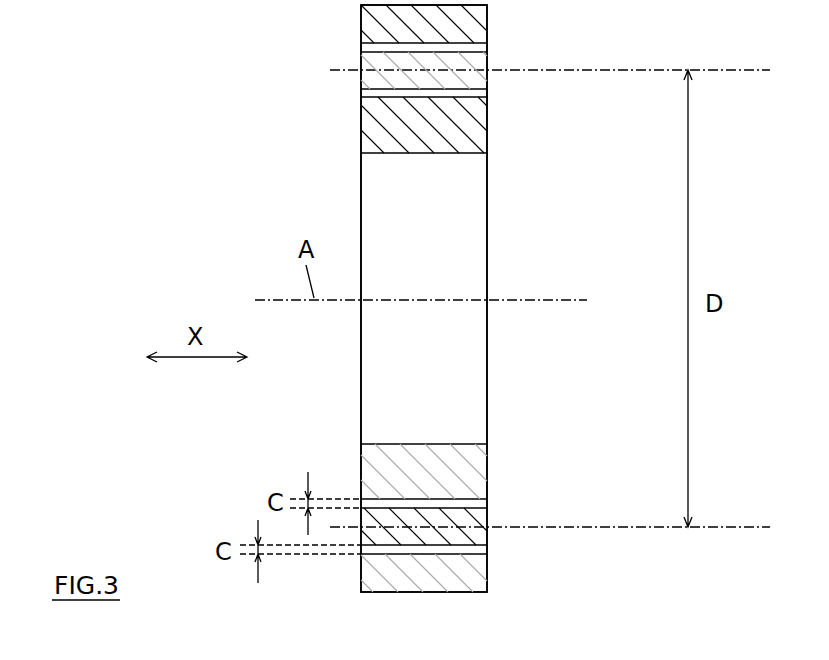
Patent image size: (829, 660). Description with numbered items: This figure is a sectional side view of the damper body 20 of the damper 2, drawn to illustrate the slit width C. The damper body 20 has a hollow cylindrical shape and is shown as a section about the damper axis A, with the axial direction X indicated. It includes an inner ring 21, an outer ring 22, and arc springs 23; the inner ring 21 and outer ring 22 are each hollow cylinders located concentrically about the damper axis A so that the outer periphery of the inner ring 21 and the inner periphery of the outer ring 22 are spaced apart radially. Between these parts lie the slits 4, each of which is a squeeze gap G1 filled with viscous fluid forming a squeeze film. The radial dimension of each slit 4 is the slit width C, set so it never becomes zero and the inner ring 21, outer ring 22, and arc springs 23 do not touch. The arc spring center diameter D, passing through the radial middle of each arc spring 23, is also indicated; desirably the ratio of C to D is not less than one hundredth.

The damper 2 is at (238, 234).
The slit 4 is at (489, 47).
The damper body 20 is at (360, 143).
The inner ring 21 is at (489, 147).
The outer ring 22 is at (489, 20).
The arc spring 23 is at (489, 517).